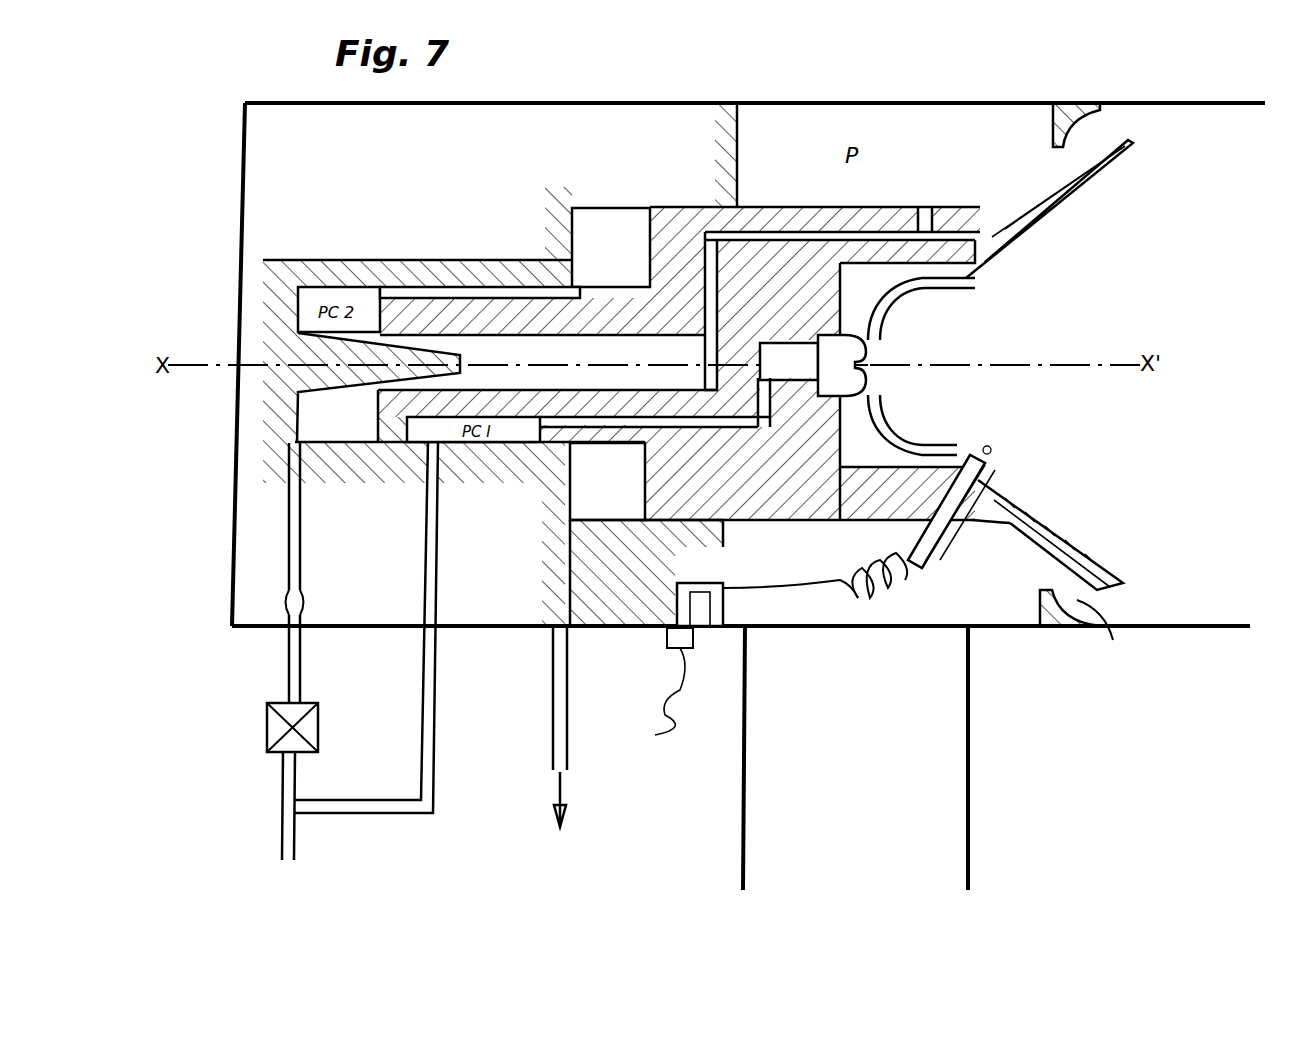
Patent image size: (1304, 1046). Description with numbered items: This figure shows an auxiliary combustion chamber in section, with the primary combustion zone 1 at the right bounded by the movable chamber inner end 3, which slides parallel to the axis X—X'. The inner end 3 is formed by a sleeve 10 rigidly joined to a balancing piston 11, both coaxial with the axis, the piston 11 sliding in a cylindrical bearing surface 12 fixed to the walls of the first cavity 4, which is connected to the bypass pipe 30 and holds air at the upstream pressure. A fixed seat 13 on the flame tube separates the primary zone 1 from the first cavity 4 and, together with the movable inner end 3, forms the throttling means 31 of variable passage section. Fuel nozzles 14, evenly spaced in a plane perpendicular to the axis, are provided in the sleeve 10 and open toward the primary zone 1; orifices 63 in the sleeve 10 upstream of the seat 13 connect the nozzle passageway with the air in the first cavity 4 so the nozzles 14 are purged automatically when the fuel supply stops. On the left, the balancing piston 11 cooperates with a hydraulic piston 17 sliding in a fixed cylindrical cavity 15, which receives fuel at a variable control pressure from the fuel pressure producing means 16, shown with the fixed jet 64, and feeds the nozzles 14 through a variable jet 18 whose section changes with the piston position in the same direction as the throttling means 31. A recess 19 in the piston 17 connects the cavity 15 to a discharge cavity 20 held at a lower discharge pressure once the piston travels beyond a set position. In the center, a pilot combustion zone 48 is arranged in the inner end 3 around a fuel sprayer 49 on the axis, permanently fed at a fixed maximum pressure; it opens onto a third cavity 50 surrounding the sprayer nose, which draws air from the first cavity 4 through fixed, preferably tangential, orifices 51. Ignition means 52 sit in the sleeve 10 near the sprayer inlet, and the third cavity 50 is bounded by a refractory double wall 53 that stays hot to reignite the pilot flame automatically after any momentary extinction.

The primary combustion zone 1 is at (1229, 361).
The chamber inner end 3 is at (1060, 228).
The first cavity 4 is at (953, 152).
The sleeve 10 is at (1087, 547).
The balancing piston 11 is at (803, 207).
The cylindrical bearing surface 12 is at (610, 207).
The fixed seat 13 is at (1063, 103).
The nozzles 14 is at (1060, 540).
The fixed cylindrical cavity 15 is at (330, 272).
The means for producing variable fuel pressure 16 is at (247, 712).
The hydraulic piston 17 is at (550, 447).
The variable jet 18 is at (397, 345).
The recess 19 is at (517, 292).
The discharge cavity 20 is at (612, 495).
The bypass pipe 30 is at (930, 836).
The throttling means 31 is at (1085, 603).
The pilot combustion zone 48 is at (975, 372).
The fuel sprayer 49 is at (833, 345).
The third cavity 50 is at (870, 283).
The fixed orifices 51 is at (840, 520).
The ignition means 52 is at (933, 520).
The double wall 53 is at (907, 440).
The orifices 63 is at (930, 232).
The fixed jet 64 is at (307, 603).